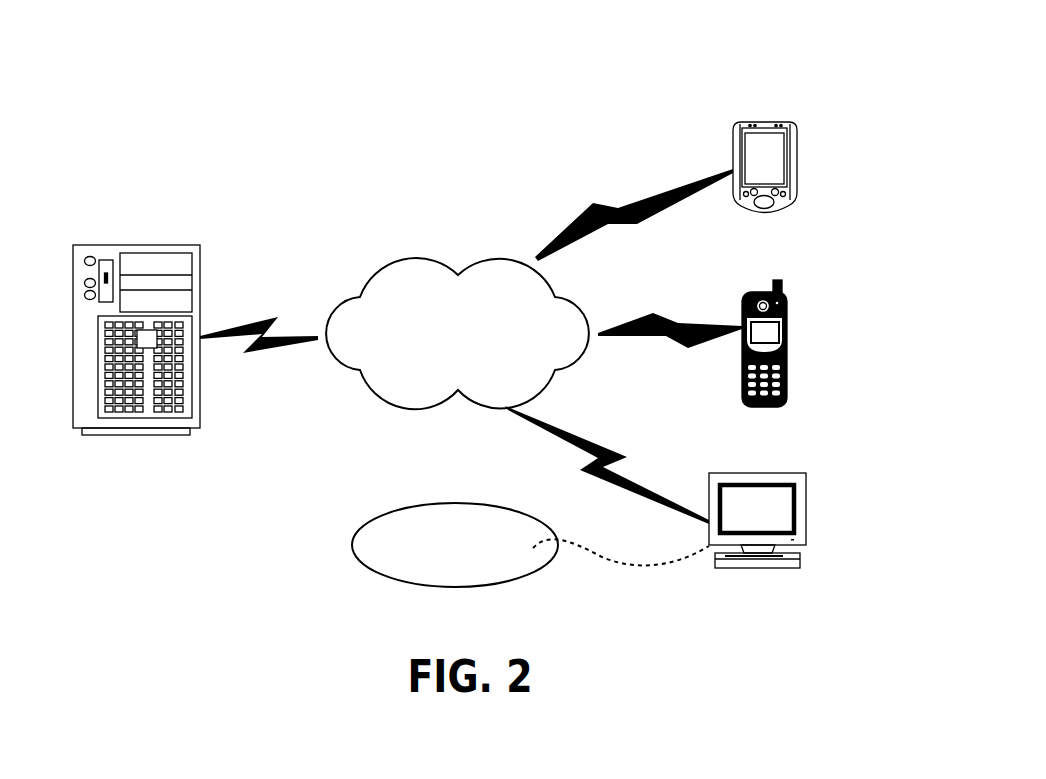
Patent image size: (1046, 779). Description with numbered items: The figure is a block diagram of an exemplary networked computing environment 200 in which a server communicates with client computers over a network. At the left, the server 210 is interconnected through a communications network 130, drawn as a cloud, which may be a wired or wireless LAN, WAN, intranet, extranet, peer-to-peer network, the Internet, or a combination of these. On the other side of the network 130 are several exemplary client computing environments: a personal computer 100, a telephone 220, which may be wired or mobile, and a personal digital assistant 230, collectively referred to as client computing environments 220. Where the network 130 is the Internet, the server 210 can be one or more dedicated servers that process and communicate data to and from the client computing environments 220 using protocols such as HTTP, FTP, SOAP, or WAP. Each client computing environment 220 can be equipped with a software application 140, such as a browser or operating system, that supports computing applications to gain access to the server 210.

The networked computing environment 200 is at (271, 131).
The server 210 is at (149, 316).
The communications network 130 is at (443, 320).
The telephone 220 is at (772, 86).
The personal digital assistant 230 is at (797, 184).
The personal computer 100 is at (797, 496).
The software application 140 is at (530, 521).